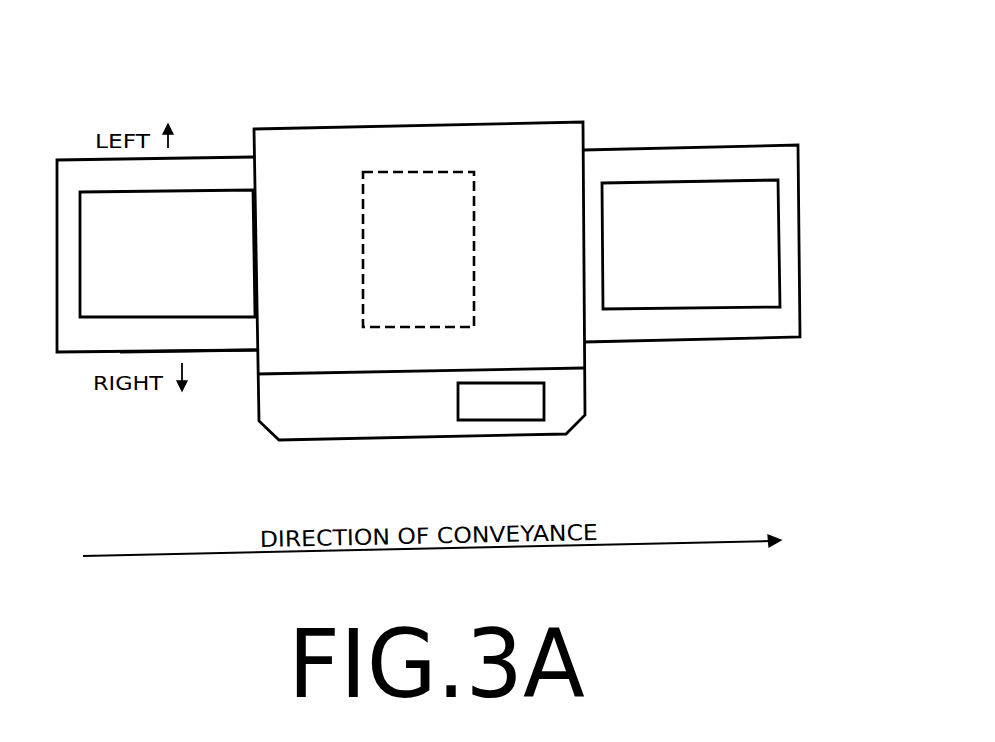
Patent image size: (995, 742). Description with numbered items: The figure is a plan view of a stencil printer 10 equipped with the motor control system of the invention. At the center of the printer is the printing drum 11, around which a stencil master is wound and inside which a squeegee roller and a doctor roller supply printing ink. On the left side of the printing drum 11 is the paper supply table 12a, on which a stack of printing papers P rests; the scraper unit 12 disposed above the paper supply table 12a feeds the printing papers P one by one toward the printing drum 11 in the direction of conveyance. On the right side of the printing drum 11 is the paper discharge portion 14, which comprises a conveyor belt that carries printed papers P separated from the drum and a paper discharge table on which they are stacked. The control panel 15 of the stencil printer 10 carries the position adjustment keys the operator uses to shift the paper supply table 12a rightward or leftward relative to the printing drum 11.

The stencil printer 10 is at (578, 88).
The printing drum 11 is at (477, 231).
The scraper unit 12 is at (252, 190).
The paper supply table 12a is at (207, 352).
The paper discharge portion 14 is at (598, 177).
The control panel 15 is at (493, 420).
The printing paper P is at (117, 191).